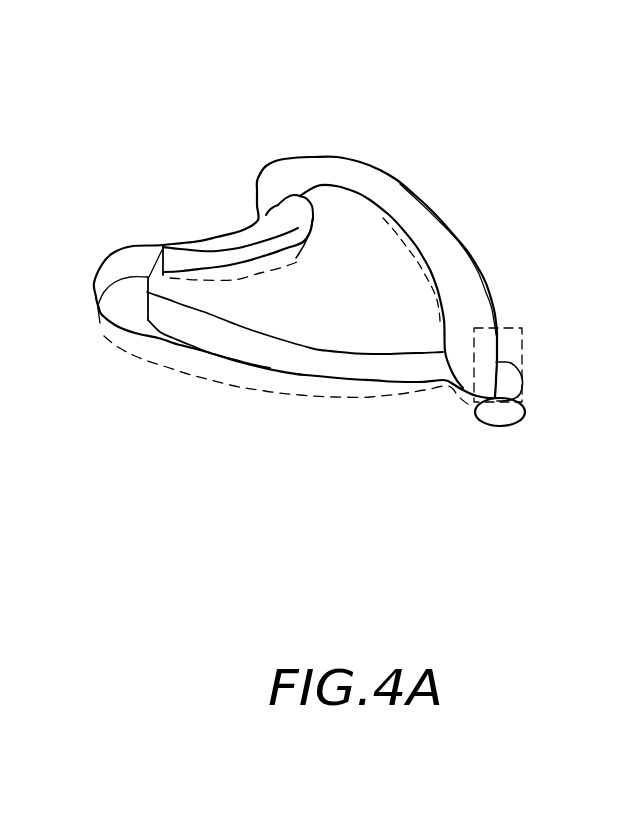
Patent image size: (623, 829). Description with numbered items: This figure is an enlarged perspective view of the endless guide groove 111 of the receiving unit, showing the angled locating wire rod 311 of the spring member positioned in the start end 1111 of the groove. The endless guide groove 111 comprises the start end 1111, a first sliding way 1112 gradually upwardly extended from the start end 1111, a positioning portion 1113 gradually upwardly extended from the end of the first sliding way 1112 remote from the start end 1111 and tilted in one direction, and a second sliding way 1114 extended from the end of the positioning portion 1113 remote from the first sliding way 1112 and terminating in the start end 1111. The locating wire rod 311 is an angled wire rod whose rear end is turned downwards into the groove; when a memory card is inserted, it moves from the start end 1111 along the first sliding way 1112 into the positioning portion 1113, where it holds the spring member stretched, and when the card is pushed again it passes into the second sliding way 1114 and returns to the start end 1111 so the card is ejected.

The endless guide groove 111 is at (304, 245).
The start end 1111 is at (476, 400).
The first sliding way 1112 is at (433, 240).
The positioning portion 1113 is at (215, 260).
The second sliding way 1114 is at (135, 312).
The locating wire rod 311 is at (512, 345).